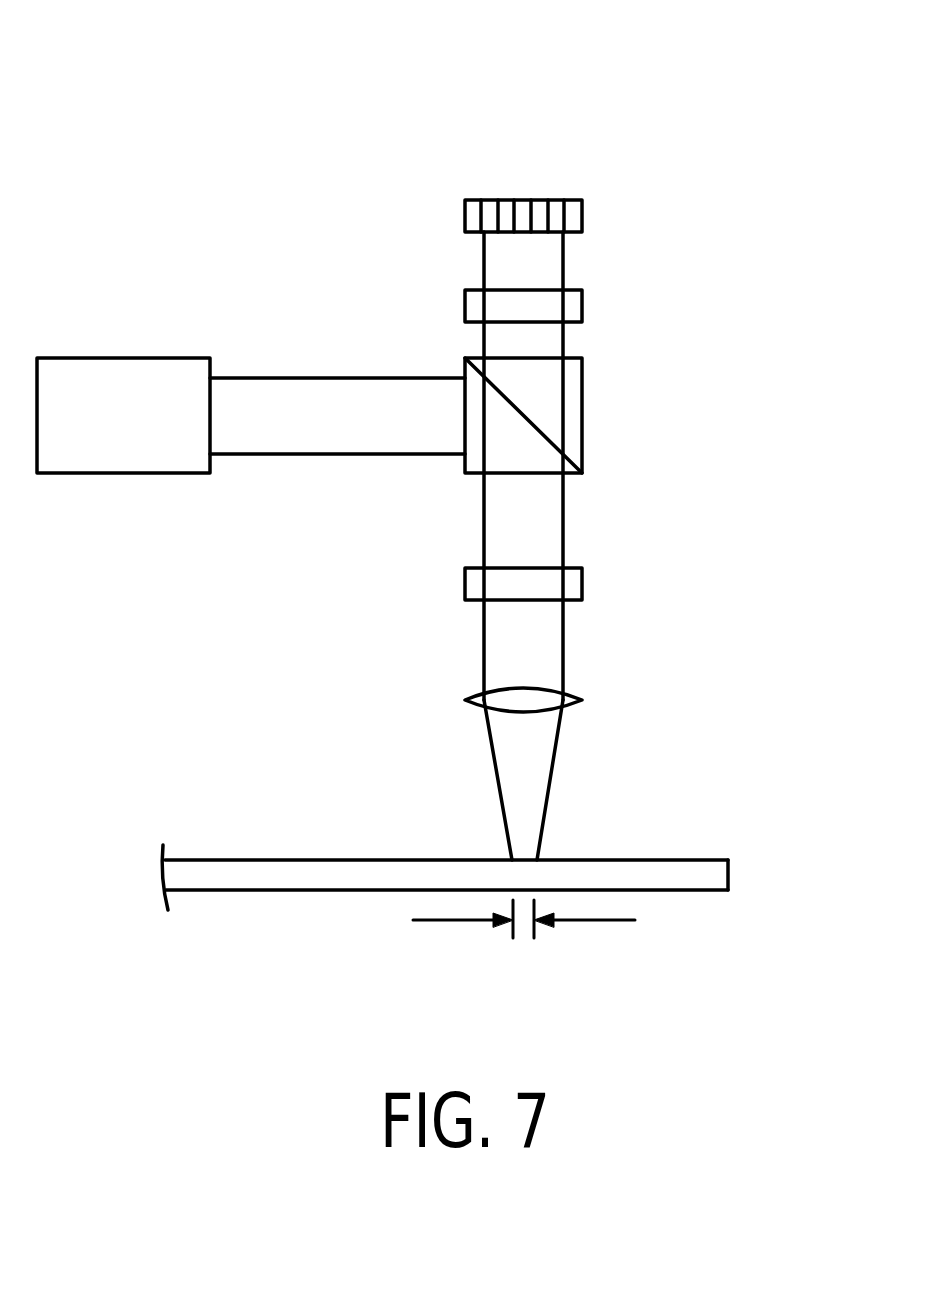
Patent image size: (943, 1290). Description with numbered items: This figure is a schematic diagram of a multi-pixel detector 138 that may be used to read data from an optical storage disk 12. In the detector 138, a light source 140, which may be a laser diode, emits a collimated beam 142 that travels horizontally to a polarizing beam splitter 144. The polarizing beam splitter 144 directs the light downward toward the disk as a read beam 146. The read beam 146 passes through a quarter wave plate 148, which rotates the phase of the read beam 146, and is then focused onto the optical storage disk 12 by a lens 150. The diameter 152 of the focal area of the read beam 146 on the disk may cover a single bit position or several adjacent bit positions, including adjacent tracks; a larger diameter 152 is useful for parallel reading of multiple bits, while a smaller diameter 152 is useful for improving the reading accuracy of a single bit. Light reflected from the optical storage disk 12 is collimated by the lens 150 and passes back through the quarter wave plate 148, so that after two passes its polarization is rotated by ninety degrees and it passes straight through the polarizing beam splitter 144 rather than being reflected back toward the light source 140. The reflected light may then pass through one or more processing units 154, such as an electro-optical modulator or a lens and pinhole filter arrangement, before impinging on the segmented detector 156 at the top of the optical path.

The multi-pixel detector 138 is at (150, 96).
The light source 140 is at (180, 358).
The collimated beam 142 is at (298, 377).
The polarizing beam splitter 144 is at (582, 413).
The read beam 146 is at (484, 522).
The quarter wave plate 148 is at (582, 582).
The lens 150 is at (582, 700).
The diameter 152 is at (523, 927).
The processing units 154 is at (465, 310).
The segmented detector 156 is at (582, 215).
The optical storage disk 12 is at (728, 872).